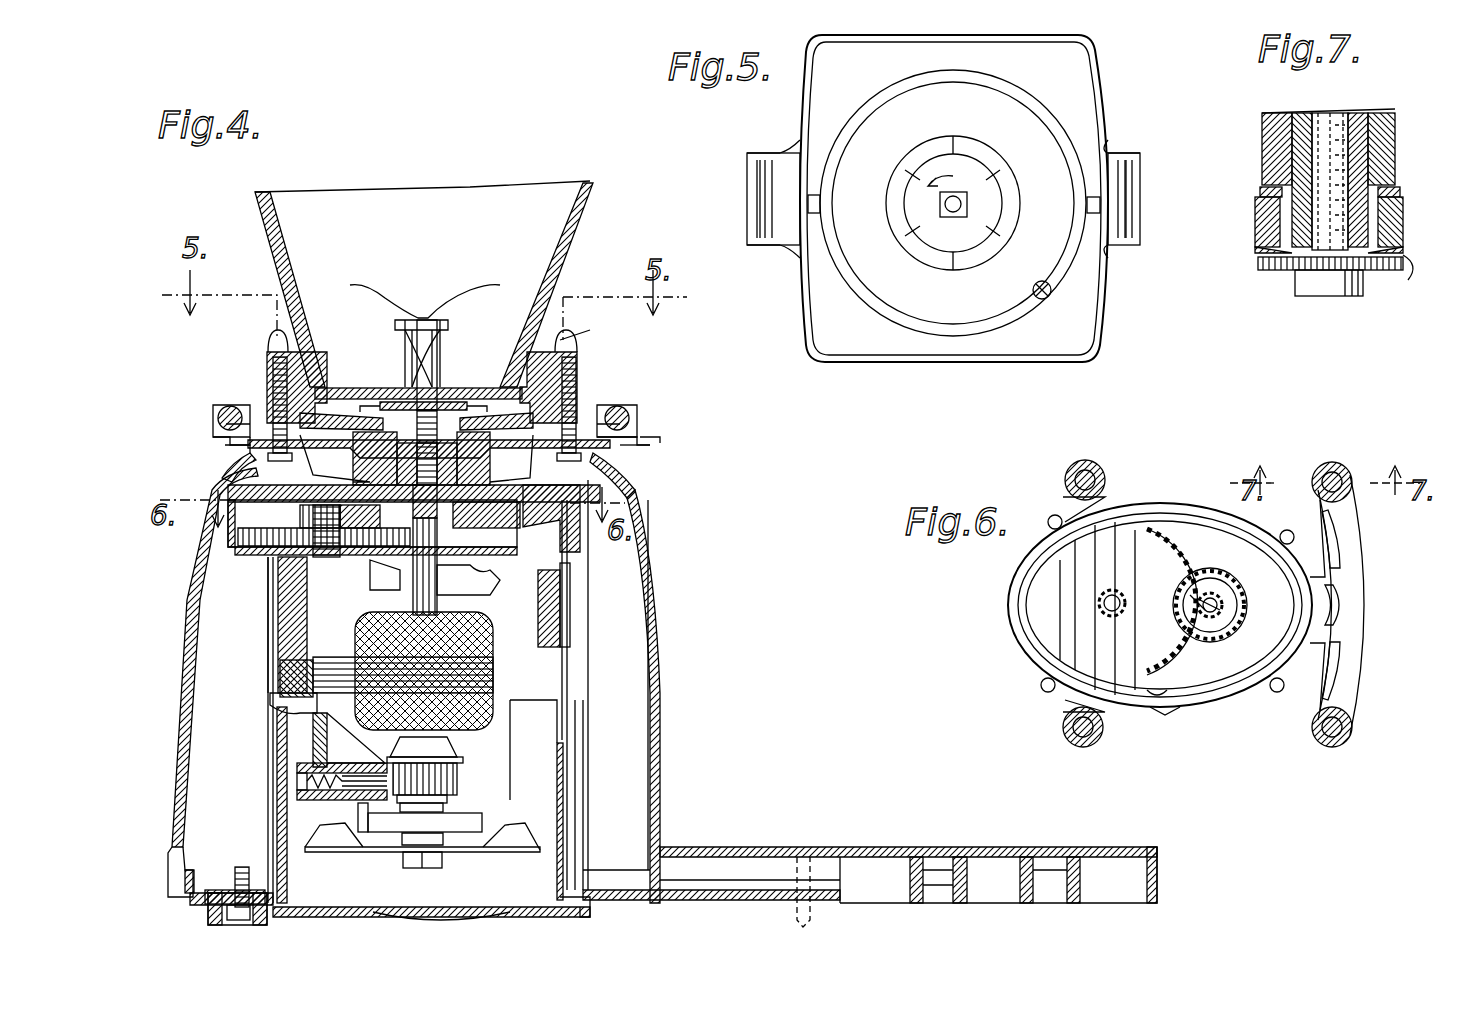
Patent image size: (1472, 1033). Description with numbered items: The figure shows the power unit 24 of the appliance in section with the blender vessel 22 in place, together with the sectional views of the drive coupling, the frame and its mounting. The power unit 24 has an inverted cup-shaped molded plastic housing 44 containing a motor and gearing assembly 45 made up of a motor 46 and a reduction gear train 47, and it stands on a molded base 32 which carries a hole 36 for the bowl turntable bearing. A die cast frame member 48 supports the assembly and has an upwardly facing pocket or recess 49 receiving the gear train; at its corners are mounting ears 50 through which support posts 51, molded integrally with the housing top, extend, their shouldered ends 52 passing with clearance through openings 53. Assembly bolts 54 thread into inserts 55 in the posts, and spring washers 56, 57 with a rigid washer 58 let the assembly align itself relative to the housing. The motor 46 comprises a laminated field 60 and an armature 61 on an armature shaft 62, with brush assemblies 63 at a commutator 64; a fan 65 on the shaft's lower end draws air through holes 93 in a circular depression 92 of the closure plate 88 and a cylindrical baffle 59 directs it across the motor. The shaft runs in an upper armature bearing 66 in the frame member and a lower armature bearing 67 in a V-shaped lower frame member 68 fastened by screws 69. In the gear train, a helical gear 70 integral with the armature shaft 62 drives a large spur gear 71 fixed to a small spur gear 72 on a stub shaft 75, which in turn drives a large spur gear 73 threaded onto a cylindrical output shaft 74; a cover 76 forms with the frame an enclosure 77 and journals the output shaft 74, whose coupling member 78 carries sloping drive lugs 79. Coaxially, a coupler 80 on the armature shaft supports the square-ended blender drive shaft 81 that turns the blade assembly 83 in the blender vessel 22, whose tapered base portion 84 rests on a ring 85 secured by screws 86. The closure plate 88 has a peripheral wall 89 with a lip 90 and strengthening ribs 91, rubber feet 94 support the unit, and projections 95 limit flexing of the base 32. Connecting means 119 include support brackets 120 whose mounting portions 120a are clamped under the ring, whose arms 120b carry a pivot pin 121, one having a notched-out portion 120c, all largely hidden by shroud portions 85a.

In FIG. 4, the blender vessel 22 is at (582, 200).
In FIG. 4, the power unit 24 is at (662, 600).
In FIG. 4, the base 32 is at (765, 847).
In FIG. 4, the hole 36 is at (1040, 847).
In FIG. 4, the housing 44 is at (188, 600).
In FIG. 4, the motor and gearing assembly 45 is at (258, 632).
In FIG. 4, the motor 46 is at (280, 675).
In FIG. 4, the reduction gear train 47 is at (264, 567).
In FIG. 4, the die cast frame member 48 is at (562, 585).
In FIG. 6, the die cast frame member 48 is at (1198, 708).
In FIG. 4, the pocket or recess 49 is at (230, 535).
In FIG. 6, the pocket or recess 49 is at (1022, 630).
In FIG. 7, the mounting ears 50 is at (1403, 222).
In FIG. 6, the mounting ears 50 is at (1065, 498).
In FIG. 7, the support posts 51 is at (1400, 118).
In FIG. 6, the support posts 51 is at (1080, 470).
In FIG. 7, the shouldered ends 52 is at (1258, 190).
In FIG. 7, the openings 53 is at (1258, 238).
In FIG. 7, the assembly bolts 54 is at (1335, 292).
In FIG. 6, the assembly bolts 54 is at (1097, 465).
In FIG. 7, the inserts 55 is at (1362, 105).
In FIG. 7, the spring washer 56 is at (1400, 165).
In FIG. 7, the spring washer 57 is at (1412, 284).
In FIG. 7, the rigid washer 58 is at (1262, 265).
In FIG. 4, the cylindrical baffle 59 is at (568, 745).
In FIG. 4, the laminated field 60 is at (335, 665).
In FIG. 4, the armature 61 is at (475, 630).
In FIG. 4, the armature shaft 62 is at (455, 540).
In FIG. 6, the armature shaft 62 is at (1222, 612).
In FIG. 4, the brush assemblies 63 is at (300, 782).
In FIG. 4, the commutator 64 is at (458, 762).
In FIG. 4, the fan 65 is at (525, 835).
In FIG. 4, the upper armature bearing 66 is at (495, 578).
In FIG. 4, the lower armature bearing 67 is at (445, 805).
In FIG. 4, the lower frame member 68 is at (300, 725).
In FIG. 4, the screws 69 is at (280, 705).
In FIG. 4, the helical gear 70 is at (395, 575).
In FIG. 6, the helical gear 70 is at (1205, 625).
In FIG. 4, the large spur gear 71 is at (290, 518).
In FIG. 6, the large spur gear 71 is at (1155, 520).
In FIG. 4, the small spur gear 72 is at (340, 515).
In FIG. 6, the small spur gear 72 is at (1105, 595).
In FIG. 4, the large spur gear 73 is at (552, 519).
In FIG. 6, the large spur gear 73 is at (1195, 520).
In FIG. 4, the output shaft 74 is at (500, 462).
In FIG. 6, the output shaft 74 is at (1214, 592).
In FIG. 4, the stub shaft 75 is at (330, 560).
In FIG. 4, the cover 76 is at (222, 482).
In FIG. 4, the enclosure 77 is at (235, 548).
In FIG. 4, the coupling member 78 is at (350, 448).
In FIG. 5, the coupling member 78 is at (980, 150).
In FIG. 4, the drive lugs 79 is at (380, 403).
In FIG. 5, the drive lugs 79 is at (963, 262).
In FIG. 4, the coupler 80 is at (440, 448).
In FIG. 4, the blender drive shaft 81 is at (410, 372).
In FIG. 5, the blender drive shaft 81 is at (950, 214).
In FIG. 4, the blade assembly 83 is at (453, 288).
In FIG. 4, the base portion 84 is at (587, 322).
In FIG. 4, the ring 85 is at (272, 352).
In FIG. 5, the ring 85 is at (866, 348).
In FIG. 4, the shroud portions 85a is at (218, 396).
In FIG. 5, the shroud portions 85a is at (790, 150).
In FIG. 4, the screws 86 is at (240, 462).
In FIG. 4, the closure plate 88 is at (515, 917).
In FIG. 4, the peripheral wall 89 is at (235, 880).
In FIG. 4, the lip 90 is at (170, 880).
In FIG. 4, the strengthening ribs 91 is at (632, 888).
In FIG. 4, the circular depression 92 is at (560, 897).
In FIG. 4, the holes 93 is at (368, 910).
In FIG. 4, the rubber feet 94 is at (210, 912).
In FIG. 4, the projections 95 is at (800, 920).
In FIG. 4, the connecting means 119 is at (224, 401).
In FIG. 5, the connecting means 119 is at (738, 219).
In FIG. 4, the support brackets 120 is at (212, 432).
In FIG. 5, the support brackets 120 is at (750, 155).
In FIG. 4, the mounting portions 120a is at (578, 360).
In FIG. 4, the arms 120b is at (215, 447).
In FIG. 4, the notched-out portion 120c is at (661, 440).
In FIG. 4, the pivot pin 121 is at (222, 413).
In FIG. 5, the pivot pin 121 is at (757, 185).